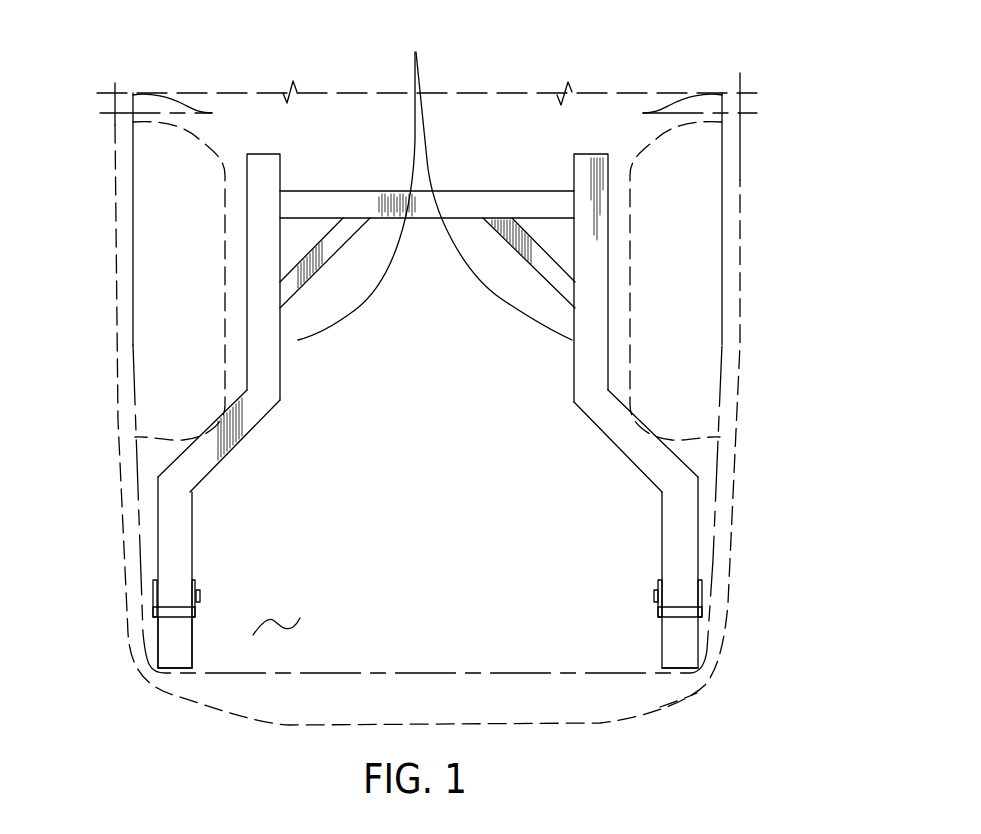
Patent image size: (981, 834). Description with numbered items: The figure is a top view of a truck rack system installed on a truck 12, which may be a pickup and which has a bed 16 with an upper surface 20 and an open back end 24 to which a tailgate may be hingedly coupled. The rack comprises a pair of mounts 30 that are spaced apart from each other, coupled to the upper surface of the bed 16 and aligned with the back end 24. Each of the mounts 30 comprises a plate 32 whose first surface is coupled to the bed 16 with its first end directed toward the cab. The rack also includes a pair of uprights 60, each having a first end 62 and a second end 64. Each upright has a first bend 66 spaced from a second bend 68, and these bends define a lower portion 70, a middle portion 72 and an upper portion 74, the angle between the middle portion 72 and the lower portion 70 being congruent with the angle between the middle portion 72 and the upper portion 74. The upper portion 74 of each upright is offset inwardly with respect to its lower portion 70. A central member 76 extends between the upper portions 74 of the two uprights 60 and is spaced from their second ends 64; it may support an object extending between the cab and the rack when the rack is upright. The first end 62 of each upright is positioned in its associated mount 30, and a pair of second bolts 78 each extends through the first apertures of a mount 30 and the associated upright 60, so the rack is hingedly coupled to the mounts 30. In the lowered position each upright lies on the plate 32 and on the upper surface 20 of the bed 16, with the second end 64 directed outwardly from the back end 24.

The truck 12 is at (752, 213).
The bed 16 is at (737, 505).
The upper surface 20 is at (272, 620).
The back end 24 is at (697, 693).
The mounts 30 is at (180, 668).
The plate 32 is at (157, 633).
The uprights 60 is at (435, 179).
The first end 62 is at (681, 616).
The second end 64 is at (592, 154).
The first bend 66 is at (696, 476).
The second bend 68 is at (609, 390).
The lower portion 70 is at (157, 512).
The middle portion 72 is at (173, 460).
The upper portion 74 is at (247, 292).
The central member 76 is at (480, 191).
The second bolts 78 is at (199, 593).